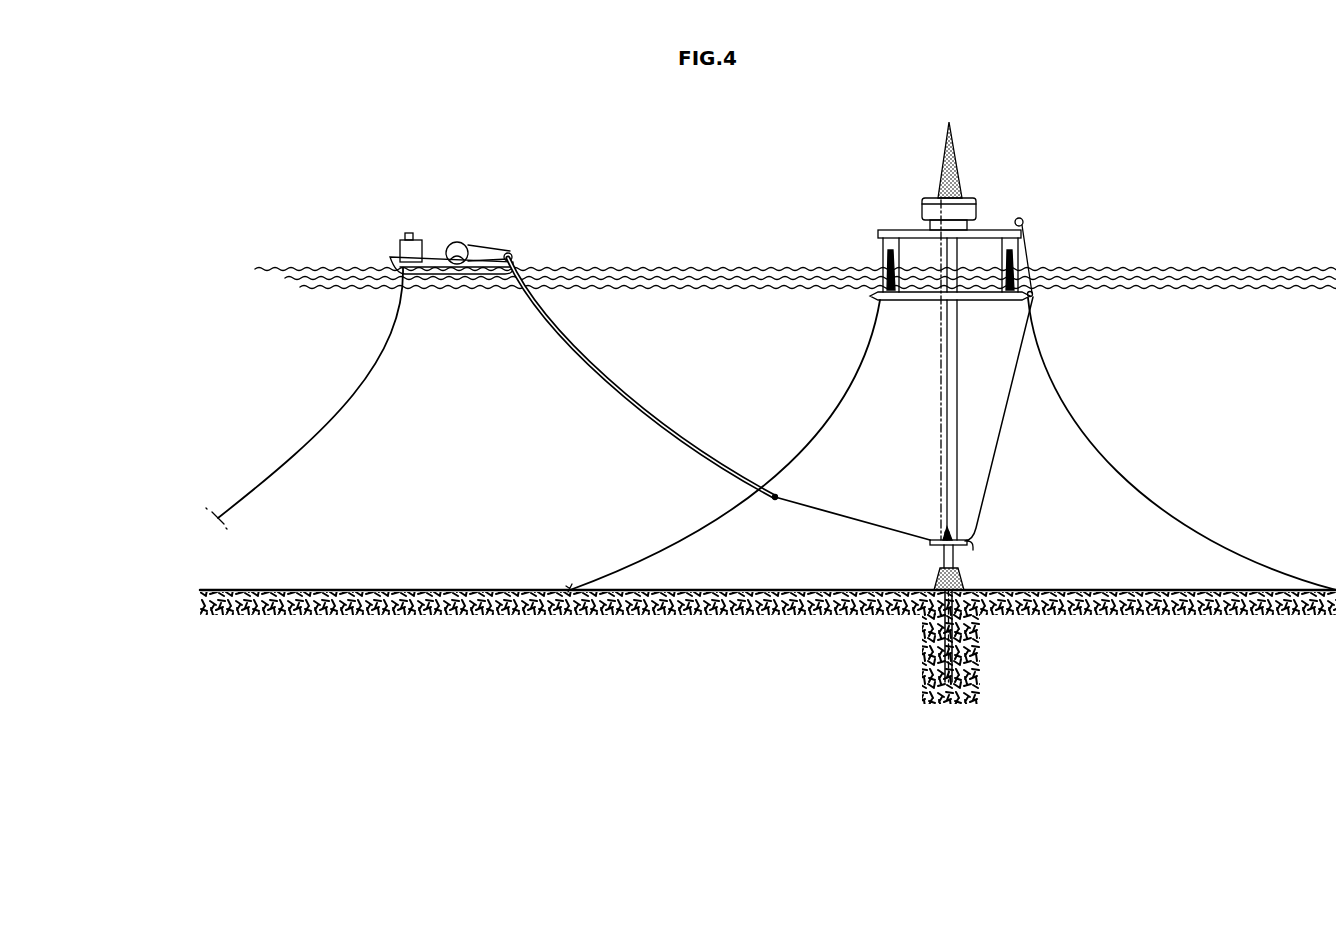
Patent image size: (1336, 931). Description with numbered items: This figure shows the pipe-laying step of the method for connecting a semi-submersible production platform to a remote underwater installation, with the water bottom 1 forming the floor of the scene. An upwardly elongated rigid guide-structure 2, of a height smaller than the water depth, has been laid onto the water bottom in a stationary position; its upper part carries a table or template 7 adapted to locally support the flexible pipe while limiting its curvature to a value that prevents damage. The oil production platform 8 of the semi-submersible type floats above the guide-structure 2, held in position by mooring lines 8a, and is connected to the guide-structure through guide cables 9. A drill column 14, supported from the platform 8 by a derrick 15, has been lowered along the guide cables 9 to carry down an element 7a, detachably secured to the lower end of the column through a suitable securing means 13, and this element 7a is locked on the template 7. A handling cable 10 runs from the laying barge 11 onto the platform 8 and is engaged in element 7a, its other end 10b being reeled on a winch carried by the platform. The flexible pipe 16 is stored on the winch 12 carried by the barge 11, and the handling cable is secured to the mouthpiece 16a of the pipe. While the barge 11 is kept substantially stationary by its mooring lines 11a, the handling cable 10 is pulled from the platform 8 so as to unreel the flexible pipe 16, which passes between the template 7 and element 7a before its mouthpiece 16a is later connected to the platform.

The sea bed 1 is at (1067, 590).
The guide-structure 2 is at (955, 552).
The template 7 is at (932, 545).
The element 7a is at (929, 534).
The oil production platform 8 is at (907, 229).
The mooring lines 8a is at (840, 408).
The guide cables 9 is at (958, 420).
The handling cable 10 is at (830, 510).
The other end of handling cable 10b is at (1023, 219).
The laying barge 11 is at (393, 256).
The mooring lines 11a is at (318, 434).
The winch 12 is at (457, 242).
The securing means 13 is at (946, 531).
The drill column 14 is at (947, 421).
The derrick 15 is at (957, 143).
The flexible pipe 16 is at (633, 413).
The mouthpiece 16a is at (775, 500).